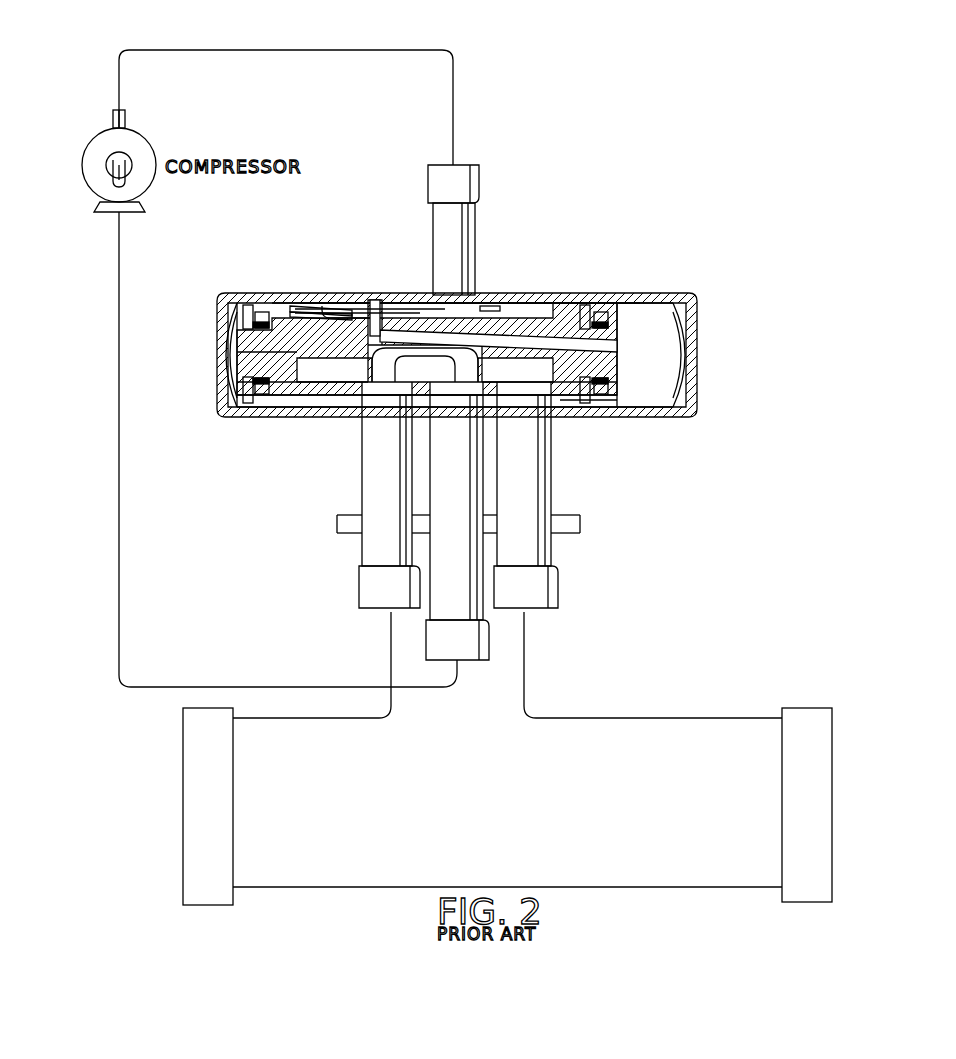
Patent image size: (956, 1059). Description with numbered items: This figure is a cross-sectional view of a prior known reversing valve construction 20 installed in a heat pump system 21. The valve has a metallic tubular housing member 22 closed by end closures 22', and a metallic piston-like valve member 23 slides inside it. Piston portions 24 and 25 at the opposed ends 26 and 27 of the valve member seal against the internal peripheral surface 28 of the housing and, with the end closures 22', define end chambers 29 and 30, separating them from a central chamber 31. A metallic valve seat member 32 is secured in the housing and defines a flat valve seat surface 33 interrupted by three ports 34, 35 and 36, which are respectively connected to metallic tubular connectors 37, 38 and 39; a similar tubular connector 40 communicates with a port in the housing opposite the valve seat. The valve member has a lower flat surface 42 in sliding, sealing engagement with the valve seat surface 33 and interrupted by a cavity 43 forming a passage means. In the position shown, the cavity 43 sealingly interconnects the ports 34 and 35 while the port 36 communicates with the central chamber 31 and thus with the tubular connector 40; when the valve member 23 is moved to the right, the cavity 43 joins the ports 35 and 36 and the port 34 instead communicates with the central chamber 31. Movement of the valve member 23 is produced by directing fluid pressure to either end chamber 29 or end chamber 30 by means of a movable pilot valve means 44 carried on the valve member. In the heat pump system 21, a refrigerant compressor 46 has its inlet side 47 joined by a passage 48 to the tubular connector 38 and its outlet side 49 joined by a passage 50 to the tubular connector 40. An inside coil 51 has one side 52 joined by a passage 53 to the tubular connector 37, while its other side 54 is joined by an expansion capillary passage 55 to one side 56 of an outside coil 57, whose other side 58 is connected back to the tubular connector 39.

The reversing valve construction 20 is at (729, 253).
The heat pump system 21 is at (670, 136).
The tubular housing member 22 is at (460, 383).
The end closures 22' is at (467, 355).
The valve member 23 is at (548, 322).
The piston portion 24 is at (262, 300).
The piston portion 25 is at (618, 322).
The end 26 is at (237, 352).
The end 27 is at (617, 347).
The internal peripheral surface 28 is at (622, 402).
The end chamber 29 is at (240, 382).
The end chamber 30 is at (660, 380).
The central chamber 31 is at (530, 300).
The valve seat member 32 is at (345, 400).
The valve seat surface 33 is at (462, 370).
The port 34 is at (378, 400).
The port 35 is at (455, 396).
The port 36 is at (522, 400).
The tubular connector 37 is at (362, 550).
The tubular connector 38 is at (466, 668).
The tubular connector 39 is at (556, 548).
The tubular connector 40 is at (437, 225).
The lower flat surface 42 is at (300, 418).
The cavity 43 is at (366, 368).
The pilot valve means 44 is at (413, 300).
The refrigerant compressor 46 is at (146, 141).
The inlet side 47 is at (110, 172).
The passage 48 is at (333, 687).
The outlet side 49 is at (113, 120).
The passage 50 is at (274, 50).
The inside coil 51 is at (183, 760).
The side 52 is at (235, 717).
The passage 53 is at (330, 718).
The side 54 is at (236, 886).
The expansion capillary passage 55 is at (645, 886).
The side 56 is at (781, 886).
The outside coil 57 is at (832, 762).
The side 58 is at (781, 717).